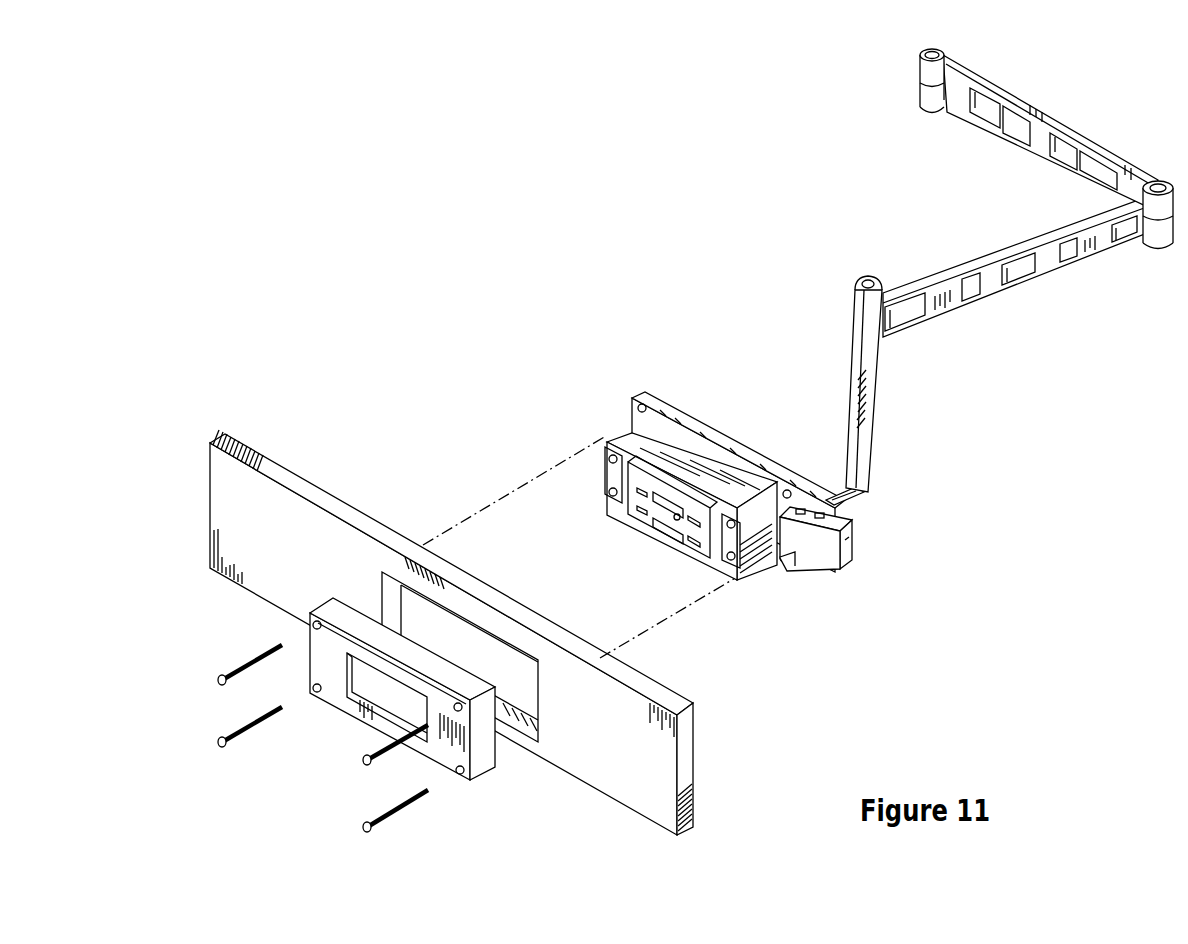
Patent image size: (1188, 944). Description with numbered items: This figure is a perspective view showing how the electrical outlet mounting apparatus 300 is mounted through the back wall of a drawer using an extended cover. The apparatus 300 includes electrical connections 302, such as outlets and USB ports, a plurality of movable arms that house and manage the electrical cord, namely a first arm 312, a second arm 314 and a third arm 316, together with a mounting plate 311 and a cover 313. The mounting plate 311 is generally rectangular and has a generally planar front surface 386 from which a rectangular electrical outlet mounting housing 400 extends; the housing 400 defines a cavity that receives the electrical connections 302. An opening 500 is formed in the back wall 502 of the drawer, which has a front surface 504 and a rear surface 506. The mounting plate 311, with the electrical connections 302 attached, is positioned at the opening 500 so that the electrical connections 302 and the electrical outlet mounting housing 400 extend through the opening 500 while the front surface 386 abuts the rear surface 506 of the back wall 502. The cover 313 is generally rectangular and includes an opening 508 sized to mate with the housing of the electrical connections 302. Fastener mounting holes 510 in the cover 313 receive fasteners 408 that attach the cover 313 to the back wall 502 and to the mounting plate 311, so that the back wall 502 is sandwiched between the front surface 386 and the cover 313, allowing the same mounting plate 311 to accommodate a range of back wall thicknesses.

The electrical outlet mounting apparatus 300 is at (726, 154).
The electrical connections 302 is at (640, 520).
The mounting plate 311 is at (878, 555).
The first arm 312 is at (1030, 122).
The cover 313 is at (477, 818).
The second arm 314 is at (1005, 248).
The third arm 316 is at (878, 394).
The front surface 386 is at (818, 500).
The electrical outlet mounting housing 400 is at (632, 432).
The fasteners 408 is at (218, 681).
The opening 500 is at (500, 655).
The back wall 502 is at (722, 686).
The front surface 504 is at (663, 782).
The rear surface 506 is at (327, 487).
The opening 508 is at (372, 711).
The fastener mounting holes 510 is at (313, 625).